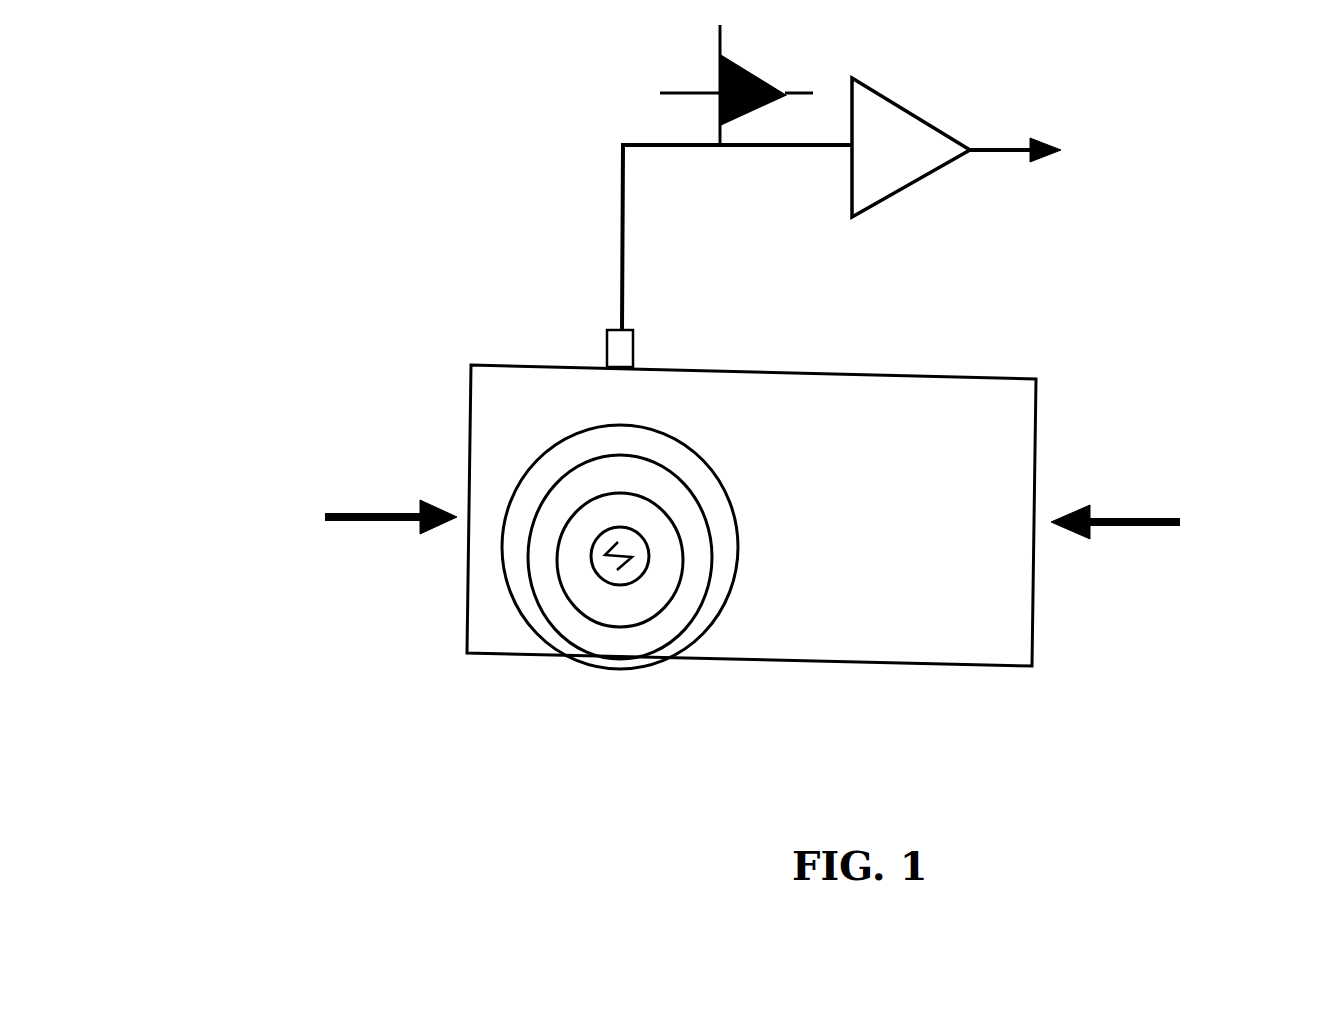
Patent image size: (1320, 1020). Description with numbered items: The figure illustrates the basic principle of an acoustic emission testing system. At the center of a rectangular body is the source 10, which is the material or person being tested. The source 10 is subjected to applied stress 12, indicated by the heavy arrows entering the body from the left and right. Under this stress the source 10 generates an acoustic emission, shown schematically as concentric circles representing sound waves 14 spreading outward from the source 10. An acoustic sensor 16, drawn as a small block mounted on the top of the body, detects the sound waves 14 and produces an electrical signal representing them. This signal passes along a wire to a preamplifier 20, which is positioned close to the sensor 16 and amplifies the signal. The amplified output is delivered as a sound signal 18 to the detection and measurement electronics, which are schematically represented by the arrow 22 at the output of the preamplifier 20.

The source 10 is at (615, 574).
The applied stress 12 is at (738, 523).
The sound waves 14 is at (745, 505).
The acoustic sensor 16 is at (588, 333).
The sound signal 18 is at (708, 62).
The preamplifier 20 is at (835, 185).
The detection and measurement electronics 22 is at (1055, 155).